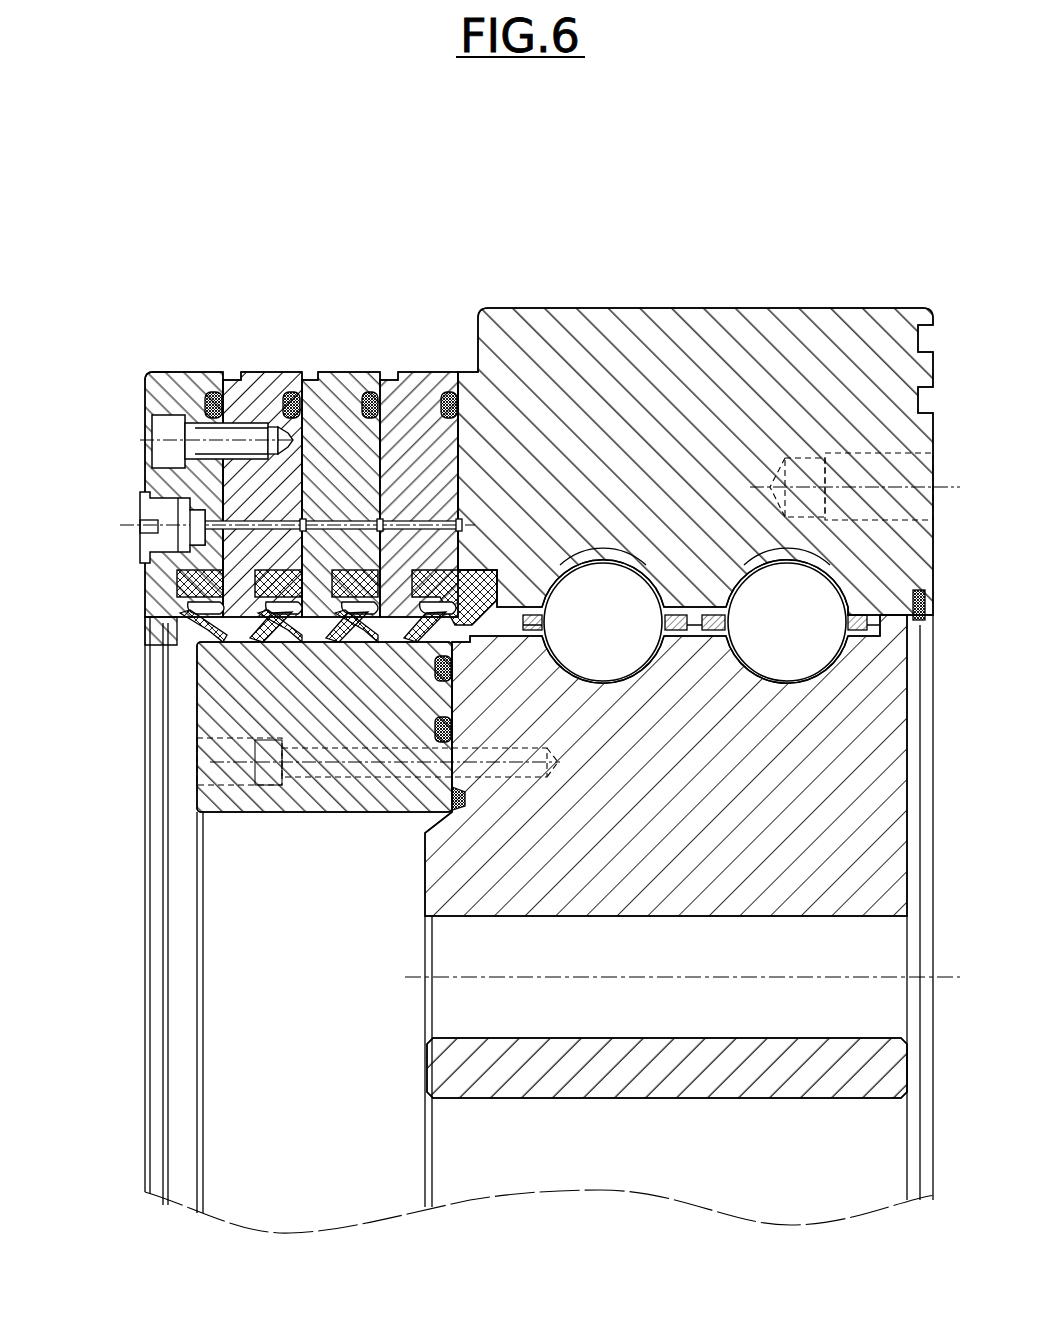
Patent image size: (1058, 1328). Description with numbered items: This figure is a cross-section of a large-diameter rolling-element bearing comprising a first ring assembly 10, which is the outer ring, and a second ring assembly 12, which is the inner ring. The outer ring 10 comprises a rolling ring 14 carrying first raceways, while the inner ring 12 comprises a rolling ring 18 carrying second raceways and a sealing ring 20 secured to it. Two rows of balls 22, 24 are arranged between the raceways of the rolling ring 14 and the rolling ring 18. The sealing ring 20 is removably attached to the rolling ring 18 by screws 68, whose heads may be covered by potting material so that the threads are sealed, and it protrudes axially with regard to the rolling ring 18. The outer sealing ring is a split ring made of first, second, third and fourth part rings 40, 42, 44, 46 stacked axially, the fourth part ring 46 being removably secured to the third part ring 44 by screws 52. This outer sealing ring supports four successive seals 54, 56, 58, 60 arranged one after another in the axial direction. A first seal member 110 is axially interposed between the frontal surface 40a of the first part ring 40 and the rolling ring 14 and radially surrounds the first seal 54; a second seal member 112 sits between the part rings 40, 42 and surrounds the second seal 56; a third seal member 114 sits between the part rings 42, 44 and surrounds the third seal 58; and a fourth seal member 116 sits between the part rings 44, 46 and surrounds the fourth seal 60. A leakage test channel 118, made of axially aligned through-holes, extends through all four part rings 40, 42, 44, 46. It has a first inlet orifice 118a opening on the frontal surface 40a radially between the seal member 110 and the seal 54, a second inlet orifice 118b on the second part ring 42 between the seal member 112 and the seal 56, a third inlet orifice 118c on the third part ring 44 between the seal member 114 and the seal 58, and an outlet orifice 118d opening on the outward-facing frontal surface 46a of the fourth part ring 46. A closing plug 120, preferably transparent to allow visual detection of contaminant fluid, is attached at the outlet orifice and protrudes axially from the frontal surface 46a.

The first ring assembly 10 is at (681, 264).
The second ring assembly 12 is at (571, 1178).
The rolling ring 14 is at (722, 345).
The rolling ring 18 is at (648, 1092).
The sealing ring 20 is at (218, 722).
The balls 22 is at (588, 637).
The balls 24 is at (772, 637).
The first part ring 40 is at (416, 364).
The frontal surface 40a is at (459, 452).
The second part ring 42 is at (334, 364).
The third part ring 44 is at (259, 364).
The fourth part ring 46 is at (216, 364).
The frontal surface 46a is at (143, 386).
The screws 52 is at (170, 415).
The first seal 54 is at (403, 637).
The second seal 56 is at (326, 634).
The third seal 58 is at (264, 594).
The fourth seal 60 is at (185, 590).
The screws 68 is at (263, 775).
The first seal member 110 is at (446, 398).
The second seal member 112 is at (363, 398).
The third seal member 114 is at (282, 398).
The fourth seal member 116 is at (199, 398).
The leakage test channel 118 is at (427, 511).
The first inlet orifice 118a is at (464, 524).
The second inlet orifice 118b is at (381, 519).
The third inlet orifice 118c is at (303, 519).
The outlet orifice 118d is at (178, 503).
The closing plug 120 is at (158, 548).